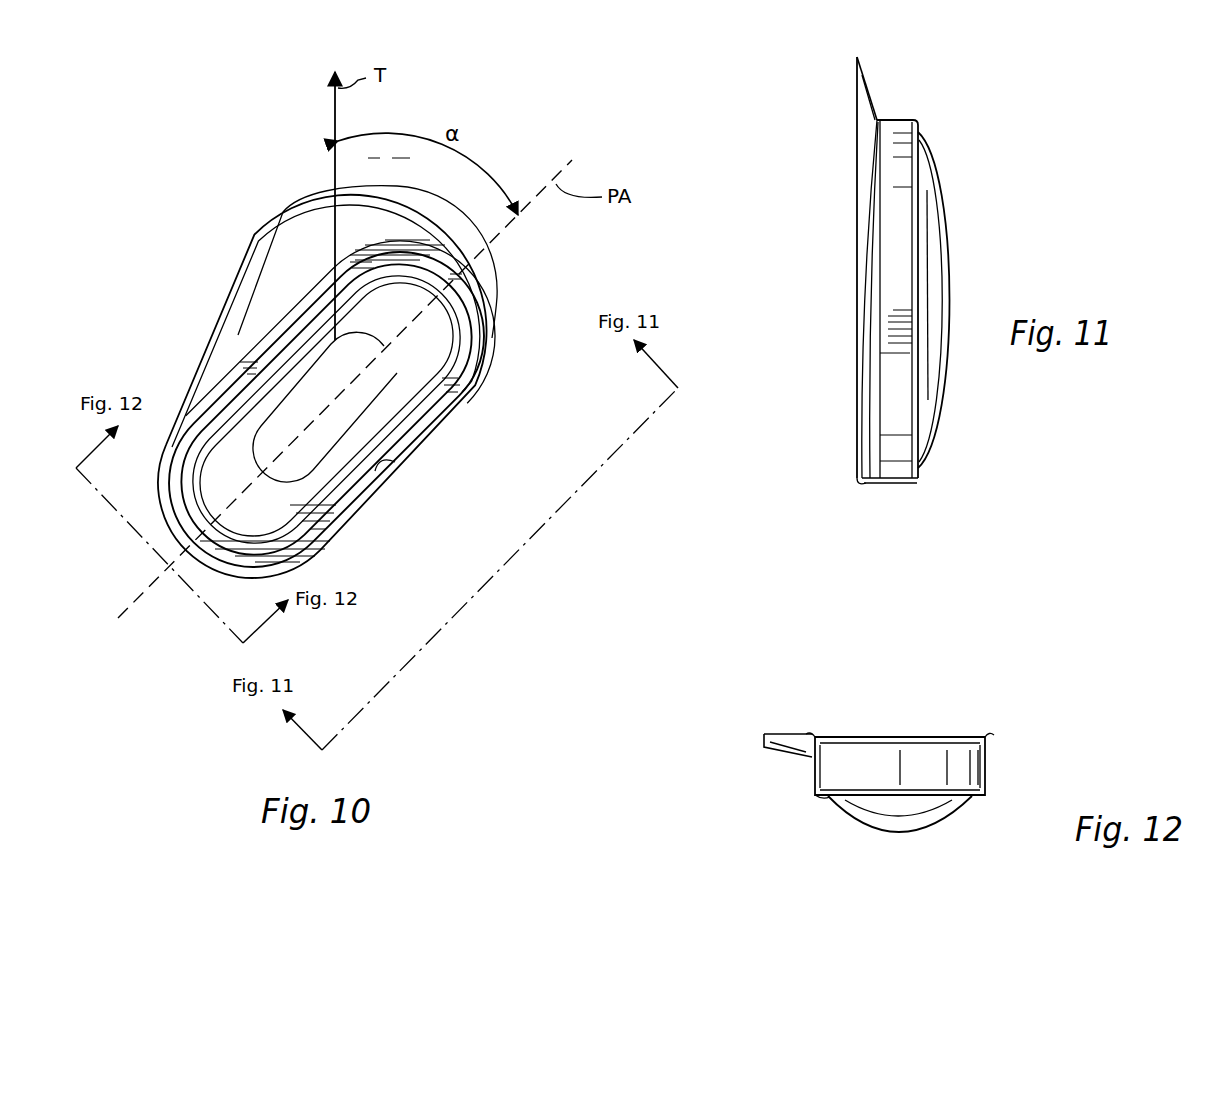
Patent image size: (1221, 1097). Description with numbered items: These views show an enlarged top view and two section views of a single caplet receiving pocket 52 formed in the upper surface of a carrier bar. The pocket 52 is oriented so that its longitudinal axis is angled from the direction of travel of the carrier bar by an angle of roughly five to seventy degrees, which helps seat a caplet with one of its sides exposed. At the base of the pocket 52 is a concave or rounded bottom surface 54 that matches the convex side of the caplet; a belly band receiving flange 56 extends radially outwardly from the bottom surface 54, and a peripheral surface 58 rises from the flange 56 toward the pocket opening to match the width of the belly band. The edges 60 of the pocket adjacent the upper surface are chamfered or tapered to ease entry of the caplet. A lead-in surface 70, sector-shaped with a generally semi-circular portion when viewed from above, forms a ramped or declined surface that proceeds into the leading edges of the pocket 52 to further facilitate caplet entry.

In FIG. 10, the caplet receiving pocket 52 is at (189, 194).
In FIG. 11, the caplet receiving pocket 52 is at (953, 106).
In FIG. 12, the caplet receiving pocket 52 is at (962, 695).
In FIG. 10, the bottom surface 54 is at (377, 418).
In FIG. 11, the bottom surface 54 is at (932, 236).
In FIG. 12, the bottom surface 54 is at (898, 815).
In FIG. 10, the belly band receiving flange 56 is at (337, 500).
In FIG. 11, the belly band receiving flange 56 is at (922, 462).
In FIG. 12, the belly band receiving flange 56 is at (825, 798).
In FIG. 10, the peripheral surface 58 is at (397, 467).
In FIG. 11, the peripheral surface 58 is at (888, 483).
In FIG. 12, the peripheral surface 58 is at (987, 772).
In FIG. 11, the edges 60 is at (860, 482).
In FIG. 12, the edges 60 is at (818, 736).
In FIG. 10, the lead-in surface 70 is at (297, 262).
In FIG. 11, the lead-in surface 70 is at (868, 100).
In FIG. 12, the lead-in surface 70 is at (772, 750).